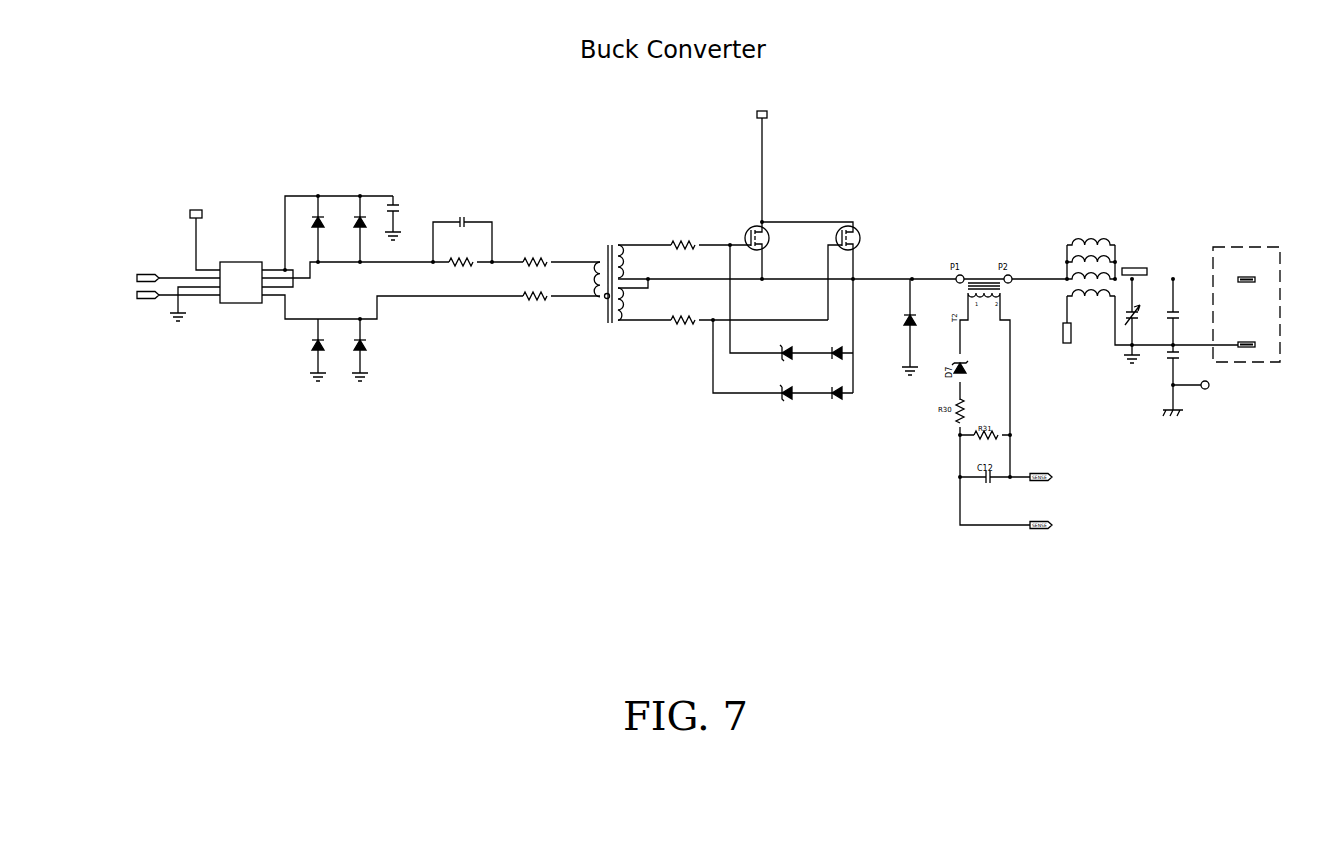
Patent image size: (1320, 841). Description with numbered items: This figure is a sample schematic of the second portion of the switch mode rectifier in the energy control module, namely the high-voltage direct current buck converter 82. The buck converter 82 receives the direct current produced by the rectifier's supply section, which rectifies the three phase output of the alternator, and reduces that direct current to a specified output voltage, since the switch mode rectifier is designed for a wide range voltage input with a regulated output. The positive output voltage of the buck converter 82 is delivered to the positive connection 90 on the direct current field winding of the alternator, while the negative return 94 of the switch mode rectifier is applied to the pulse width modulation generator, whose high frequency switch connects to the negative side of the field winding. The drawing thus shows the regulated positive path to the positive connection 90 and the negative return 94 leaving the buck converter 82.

The buck converter 82 is at (673, 207).
The positive connection 90 is at (1230, 328).
The negative return 94 is at (1232, 395).